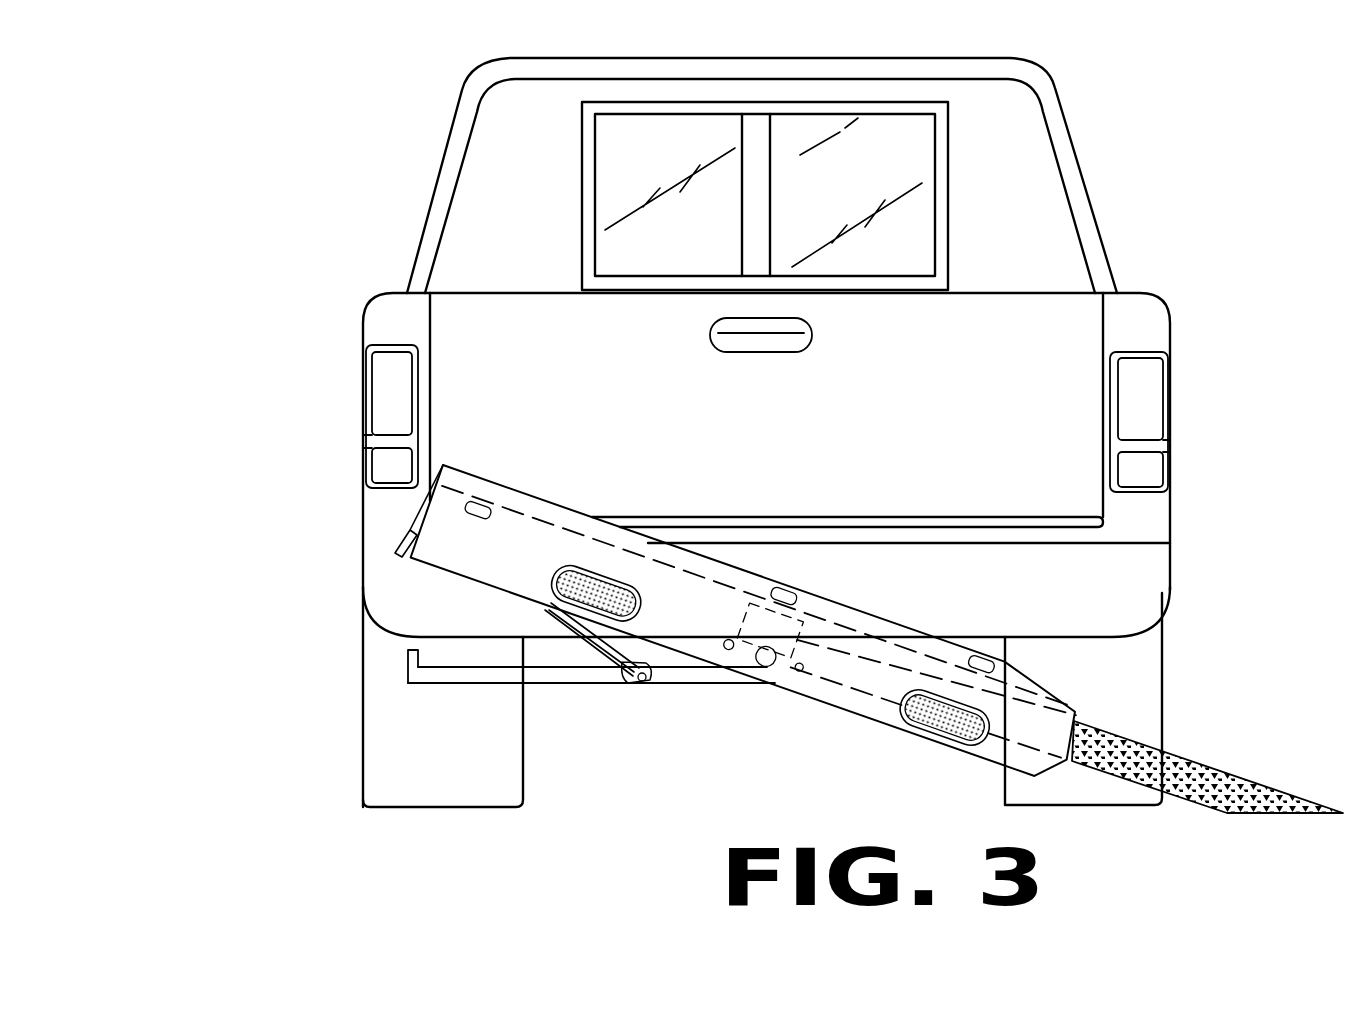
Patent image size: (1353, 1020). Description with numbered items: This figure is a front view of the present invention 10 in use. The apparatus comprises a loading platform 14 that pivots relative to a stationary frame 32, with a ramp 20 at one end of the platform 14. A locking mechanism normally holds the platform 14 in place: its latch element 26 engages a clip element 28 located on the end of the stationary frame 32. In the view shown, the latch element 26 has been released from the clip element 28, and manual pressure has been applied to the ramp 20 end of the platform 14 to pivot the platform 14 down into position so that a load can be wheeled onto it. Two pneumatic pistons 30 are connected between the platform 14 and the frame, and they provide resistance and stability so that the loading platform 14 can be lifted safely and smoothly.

The present invention 10 is at (290, 477).
The platform 14 is at (707, 590).
The ramp 20 is at (1247, 777).
The latch element 26 is at (427, 503).
The clip element 28 is at (417, 680).
The pneumatic pistons 30 is at (628, 683).
The stationary frame 32 is at (557, 680).